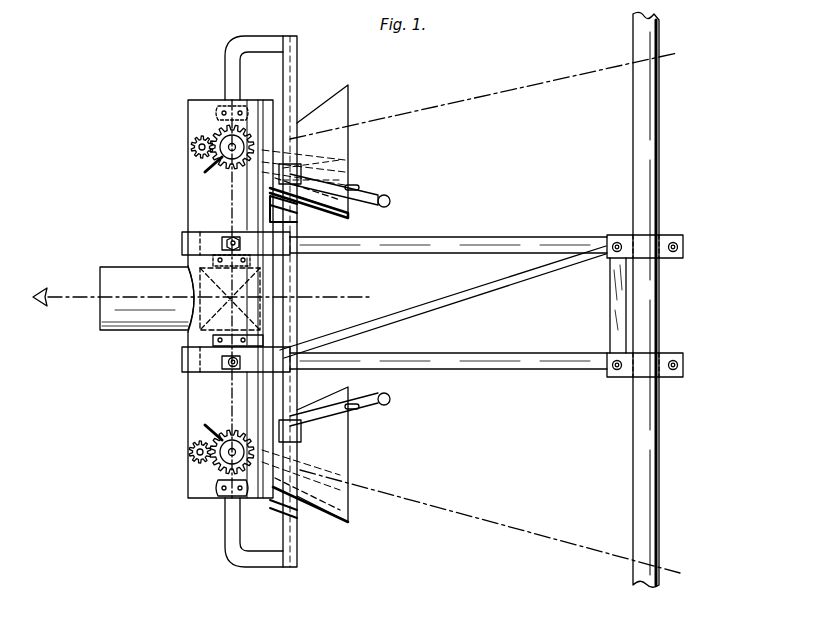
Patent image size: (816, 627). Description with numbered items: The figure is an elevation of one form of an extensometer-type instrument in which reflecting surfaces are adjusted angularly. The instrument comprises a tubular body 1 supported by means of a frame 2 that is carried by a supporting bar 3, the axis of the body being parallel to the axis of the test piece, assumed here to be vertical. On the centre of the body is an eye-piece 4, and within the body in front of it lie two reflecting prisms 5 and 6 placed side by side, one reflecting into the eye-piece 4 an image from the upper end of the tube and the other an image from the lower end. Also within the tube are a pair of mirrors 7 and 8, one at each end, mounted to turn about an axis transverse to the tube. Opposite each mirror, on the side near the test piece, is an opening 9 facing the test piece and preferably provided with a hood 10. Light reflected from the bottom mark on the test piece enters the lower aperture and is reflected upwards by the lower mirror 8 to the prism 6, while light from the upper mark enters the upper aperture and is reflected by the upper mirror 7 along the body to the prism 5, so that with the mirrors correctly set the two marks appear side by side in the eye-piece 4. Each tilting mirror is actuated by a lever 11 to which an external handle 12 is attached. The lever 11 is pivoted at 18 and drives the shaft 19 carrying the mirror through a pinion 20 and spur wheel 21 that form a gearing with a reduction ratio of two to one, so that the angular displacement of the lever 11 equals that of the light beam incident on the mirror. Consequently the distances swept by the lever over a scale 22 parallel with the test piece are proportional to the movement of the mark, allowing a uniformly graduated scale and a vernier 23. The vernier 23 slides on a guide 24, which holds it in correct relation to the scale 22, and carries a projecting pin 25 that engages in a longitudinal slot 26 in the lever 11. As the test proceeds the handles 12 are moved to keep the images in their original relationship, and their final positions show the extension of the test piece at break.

The tubular body 1 is at (192, 223).
The frame 2 is at (495, 246).
The supporting bar 3 is at (645, 145).
The eye-piece 4 is at (126, 280).
The reflecting prism 5 is at (256, 281).
The reflecting prism 6 is at (256, 316).
The upper mirror 7 is at (260, 122).
The lower mirror 8 is at (245, 475).
The opening 9 is at (267, 140).
The hood 10 is at (342, 118).
The lever 11 is at (373, 206).
The handle 12 is at (388, 201).
The pivot 18 is at (194, 141).
The shaft 19 is at (230, 143).
The pinion 20 is at (198, 150).
The spur wheel 21 is at (245, 168).
The scale 22 is at (298, 67).
The vernier 23 is at (293, 153).
The guide 24 is at (288, 218).
The projecting pin 25 is at (297, 167).
The longitudinal slot 26 is at (358, 188).